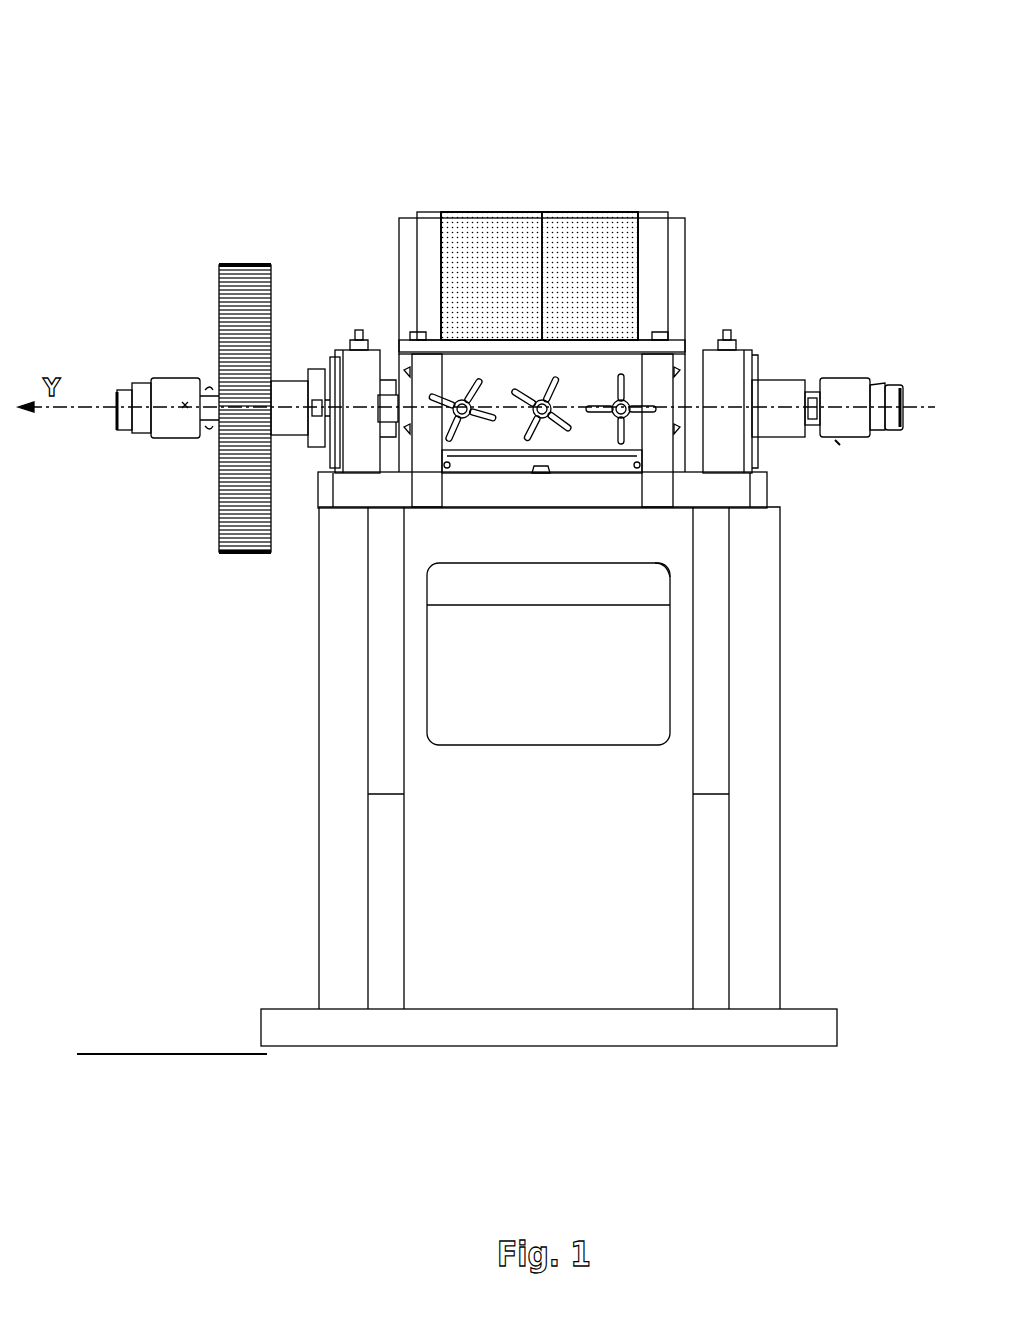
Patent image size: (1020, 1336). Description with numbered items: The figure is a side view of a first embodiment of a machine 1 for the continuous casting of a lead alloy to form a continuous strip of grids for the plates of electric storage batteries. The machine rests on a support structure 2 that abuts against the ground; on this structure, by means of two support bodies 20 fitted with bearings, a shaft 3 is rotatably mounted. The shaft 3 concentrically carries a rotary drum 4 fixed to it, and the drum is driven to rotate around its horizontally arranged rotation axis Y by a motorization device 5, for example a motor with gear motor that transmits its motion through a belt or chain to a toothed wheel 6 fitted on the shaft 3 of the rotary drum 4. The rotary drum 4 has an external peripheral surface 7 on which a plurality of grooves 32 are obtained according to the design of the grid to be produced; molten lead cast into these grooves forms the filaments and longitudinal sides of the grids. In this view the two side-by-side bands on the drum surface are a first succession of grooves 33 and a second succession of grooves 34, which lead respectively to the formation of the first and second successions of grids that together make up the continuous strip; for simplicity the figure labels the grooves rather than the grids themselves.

The calibrating apparatus 1 is at (818, 113).
The support structure 2 is at (385, 849).
The shaft 3 is at (775, 392).
The rotary drum 4 is at (432, 238).
The motorization device 5 is at (148, 290).
The toothed wheel 6 is at (238, 490).
The external peripheral surface 7 is at (598, 200).
The support bodies 20 is at (358, 450).
The grooves 32 is at (568, 248).
The first succession of grooves 33 is at (478, 212).
The second succession of grooves 34 is at (567, 212).